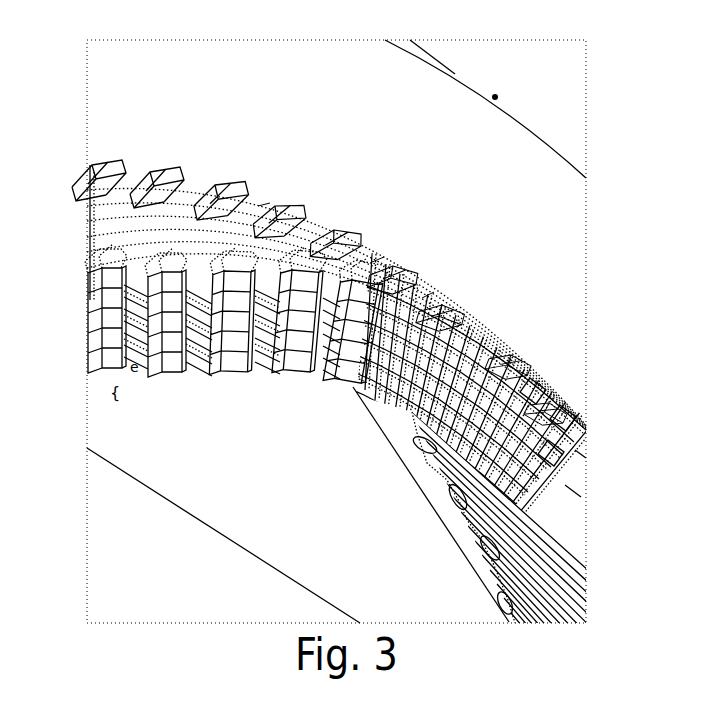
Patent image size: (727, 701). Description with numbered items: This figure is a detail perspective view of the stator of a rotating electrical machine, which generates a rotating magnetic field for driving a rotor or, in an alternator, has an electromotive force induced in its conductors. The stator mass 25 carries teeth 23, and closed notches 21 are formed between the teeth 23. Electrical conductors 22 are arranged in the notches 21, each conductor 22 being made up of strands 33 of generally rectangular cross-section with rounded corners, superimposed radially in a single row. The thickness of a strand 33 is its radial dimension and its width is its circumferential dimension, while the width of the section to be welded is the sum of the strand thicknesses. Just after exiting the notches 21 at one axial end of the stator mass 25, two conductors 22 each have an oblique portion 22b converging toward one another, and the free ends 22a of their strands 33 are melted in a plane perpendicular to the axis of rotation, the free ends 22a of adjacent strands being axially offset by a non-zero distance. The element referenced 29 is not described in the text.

The notch 21 is at (170, 182).
The electrical conductor 22 is at (313, 212).
The free end 22a is at (530, 376).
The oblique portion 22b is at (132, 203).
The tooth 23 is at (262, 207).
The stator mass 25 is at (495, 95).
The housing inner surface 29 is at (508, 150).
The strand 33 is at (85, 257).